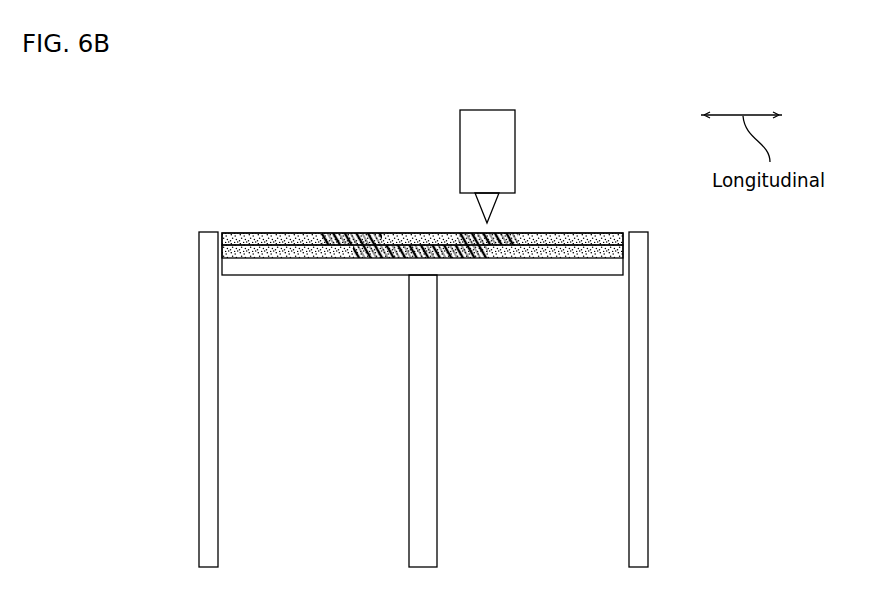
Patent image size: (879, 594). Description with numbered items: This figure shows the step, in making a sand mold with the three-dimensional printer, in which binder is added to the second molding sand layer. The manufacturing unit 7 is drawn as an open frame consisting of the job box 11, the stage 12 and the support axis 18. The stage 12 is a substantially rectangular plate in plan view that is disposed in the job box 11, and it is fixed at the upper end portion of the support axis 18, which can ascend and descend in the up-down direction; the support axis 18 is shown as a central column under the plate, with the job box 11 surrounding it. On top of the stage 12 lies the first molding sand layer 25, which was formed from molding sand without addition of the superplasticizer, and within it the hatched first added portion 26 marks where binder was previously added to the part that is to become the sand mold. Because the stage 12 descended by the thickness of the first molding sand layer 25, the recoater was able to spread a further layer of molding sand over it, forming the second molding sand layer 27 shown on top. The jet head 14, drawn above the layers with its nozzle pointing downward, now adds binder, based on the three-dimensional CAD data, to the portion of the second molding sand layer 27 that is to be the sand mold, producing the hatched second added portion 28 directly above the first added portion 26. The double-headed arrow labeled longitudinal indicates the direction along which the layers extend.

The manufacturing unit 7 is at (463, 399).
The job box 11 is at (637, 467).
The stage 12 is at (422, 269).
The jet head 14 is at (483, 120).
The support axis 18 is at (427, 468).
The first molding sand layer 25 is at (573, 260).
The first added portion 26 is at (461, 259).
The second molding sand layer 27 is at (577, 237).
The second added portion 28 is at (508, 233).